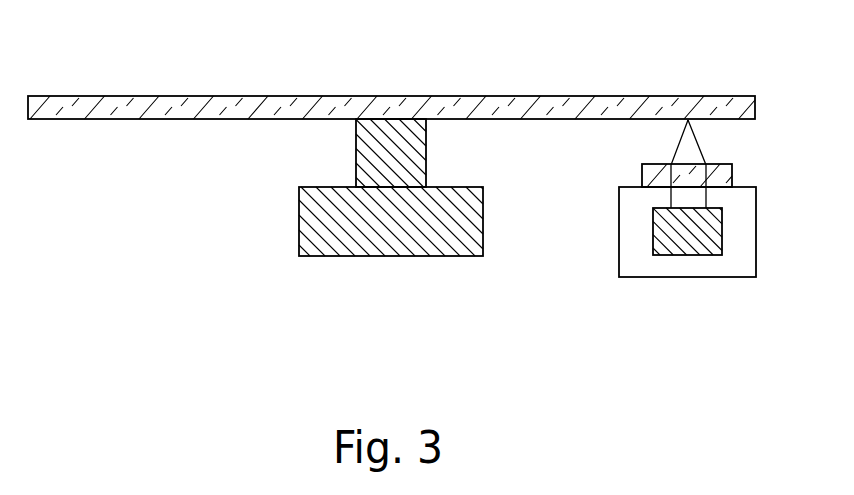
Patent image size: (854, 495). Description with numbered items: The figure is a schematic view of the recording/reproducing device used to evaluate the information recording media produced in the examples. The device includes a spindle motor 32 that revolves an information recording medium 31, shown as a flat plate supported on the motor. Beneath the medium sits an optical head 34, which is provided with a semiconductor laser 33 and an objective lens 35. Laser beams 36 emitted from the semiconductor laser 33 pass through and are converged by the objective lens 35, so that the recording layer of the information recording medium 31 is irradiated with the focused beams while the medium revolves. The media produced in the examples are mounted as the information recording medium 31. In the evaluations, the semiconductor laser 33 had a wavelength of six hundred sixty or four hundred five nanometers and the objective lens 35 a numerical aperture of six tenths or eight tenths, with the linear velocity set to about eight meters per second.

The information recording medium 31 is at (513, 97).
The spindle motor 32 is at (392, 256).
The semiconductor laser 33 is at (722, 230).
The optical head 34 is at (692, 277).
The objective lens 35 is at (727, 182).
The laser beams 36 is at (700, 145).